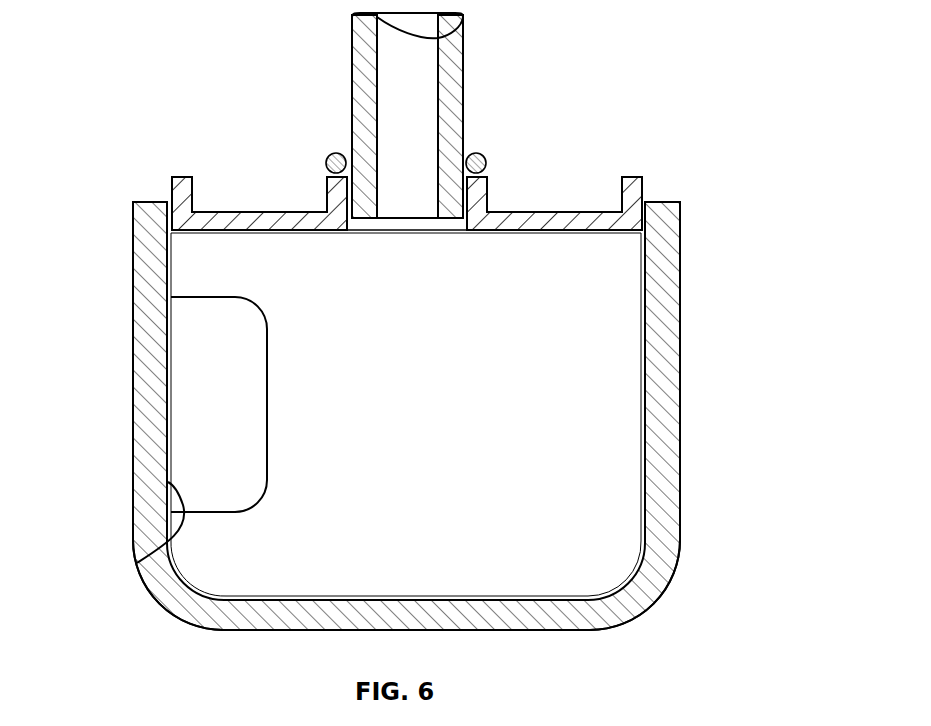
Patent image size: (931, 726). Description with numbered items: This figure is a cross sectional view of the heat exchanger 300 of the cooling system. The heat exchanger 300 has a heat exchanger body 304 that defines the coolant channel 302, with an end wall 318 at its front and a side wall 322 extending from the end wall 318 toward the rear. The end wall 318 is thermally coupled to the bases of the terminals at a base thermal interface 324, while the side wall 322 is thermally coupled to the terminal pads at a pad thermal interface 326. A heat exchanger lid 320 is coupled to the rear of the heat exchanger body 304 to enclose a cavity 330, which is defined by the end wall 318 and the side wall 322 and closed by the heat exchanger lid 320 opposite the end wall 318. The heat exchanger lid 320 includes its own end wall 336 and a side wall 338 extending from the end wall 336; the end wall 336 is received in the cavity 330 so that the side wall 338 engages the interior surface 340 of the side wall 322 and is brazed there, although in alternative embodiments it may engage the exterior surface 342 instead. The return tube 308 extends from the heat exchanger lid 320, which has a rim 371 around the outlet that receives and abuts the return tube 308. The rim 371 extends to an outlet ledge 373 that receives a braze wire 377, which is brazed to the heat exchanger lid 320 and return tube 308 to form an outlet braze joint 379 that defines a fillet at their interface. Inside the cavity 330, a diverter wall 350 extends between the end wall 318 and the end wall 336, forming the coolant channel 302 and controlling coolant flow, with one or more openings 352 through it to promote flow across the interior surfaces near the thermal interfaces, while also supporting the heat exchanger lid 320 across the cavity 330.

The heat exchanger 300 is at (718, 172).
The coolant channel 302 is at (205, 414).
The heat exchanger body 304 is at (668, 368).
The return tube 308 is at (455, 52).
The end wall 318 is at (537, 630).
The heat exchanger lid 320 is at (552, 212).
The side wall 322 is at (133, 382).
The base thermal interface 324 is at (277, 634).
The pad thermal interface 326 is at (133, 335).
The cavity 330 is at (615, 292).
The end wall 336 is at (232, 212).
The side wall 338 is at (175, 190).
The interior surface 340 is at (137, 563).
The exterior surface 342 is at (133, 500).
The diverter wall 350 is at (608, 450).
The opening 352 is at (178, 322).
The rim 371 is at (325, 190).
The outlet ledge 373 is at (324, 163).
The braze wire 377 is at (340, 153).
The outlet braze joint 379 is at (488, 160).